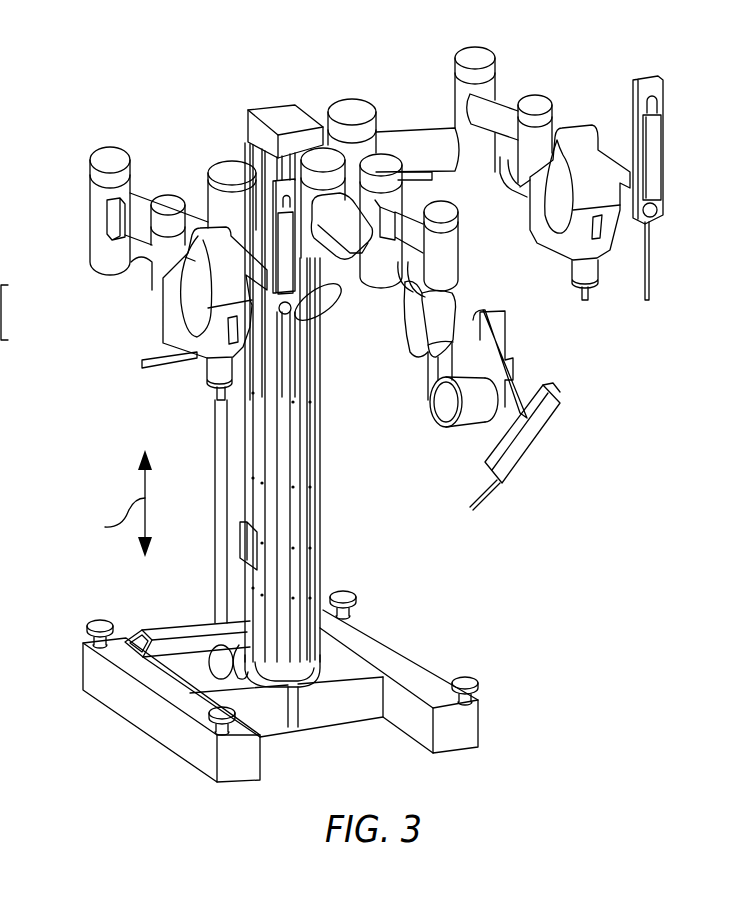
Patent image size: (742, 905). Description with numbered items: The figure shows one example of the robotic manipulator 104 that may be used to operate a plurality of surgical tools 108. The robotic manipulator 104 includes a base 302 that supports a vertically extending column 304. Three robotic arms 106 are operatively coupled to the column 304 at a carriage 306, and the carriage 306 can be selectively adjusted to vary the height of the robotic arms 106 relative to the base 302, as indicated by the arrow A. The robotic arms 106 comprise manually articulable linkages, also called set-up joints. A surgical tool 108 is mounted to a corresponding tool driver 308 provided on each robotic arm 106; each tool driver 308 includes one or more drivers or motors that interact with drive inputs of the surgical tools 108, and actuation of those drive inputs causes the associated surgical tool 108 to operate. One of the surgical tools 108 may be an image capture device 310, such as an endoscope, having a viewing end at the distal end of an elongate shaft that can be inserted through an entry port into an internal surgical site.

The robotic manipulator 104 is at (142, 61).
The robotic arms 106 is at (143, 308).
The surgical tools 108 is at (304, 275).
The base 302 is at (422, 677).
The column 304 is at (318, 507).
The carriage 306 is at (332, 268).
The tool drivers 308 is at (262, 170).
The image capture device 310 is at (647, 290).